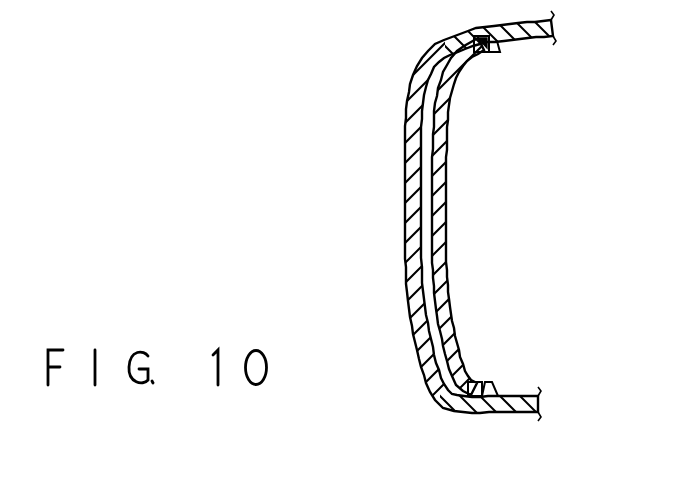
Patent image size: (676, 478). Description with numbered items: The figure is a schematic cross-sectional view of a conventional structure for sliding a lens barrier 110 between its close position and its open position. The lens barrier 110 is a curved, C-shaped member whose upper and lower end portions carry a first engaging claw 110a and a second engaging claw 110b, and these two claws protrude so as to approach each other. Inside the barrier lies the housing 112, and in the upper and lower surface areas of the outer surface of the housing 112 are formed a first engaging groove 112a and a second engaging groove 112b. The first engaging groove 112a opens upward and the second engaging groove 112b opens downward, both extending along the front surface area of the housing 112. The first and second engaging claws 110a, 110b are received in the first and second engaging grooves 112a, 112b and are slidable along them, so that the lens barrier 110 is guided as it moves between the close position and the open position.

The lens barrier 110 is at (406, 179).
The first engaging claw 110a is at (484, 58).
The second engaging claw 110b is at (491, 384).
The housing 112 is at (447, 178).
The first engaging groove 112a is at (490, 44).
The second engaging groove 112b is at (471, 381).